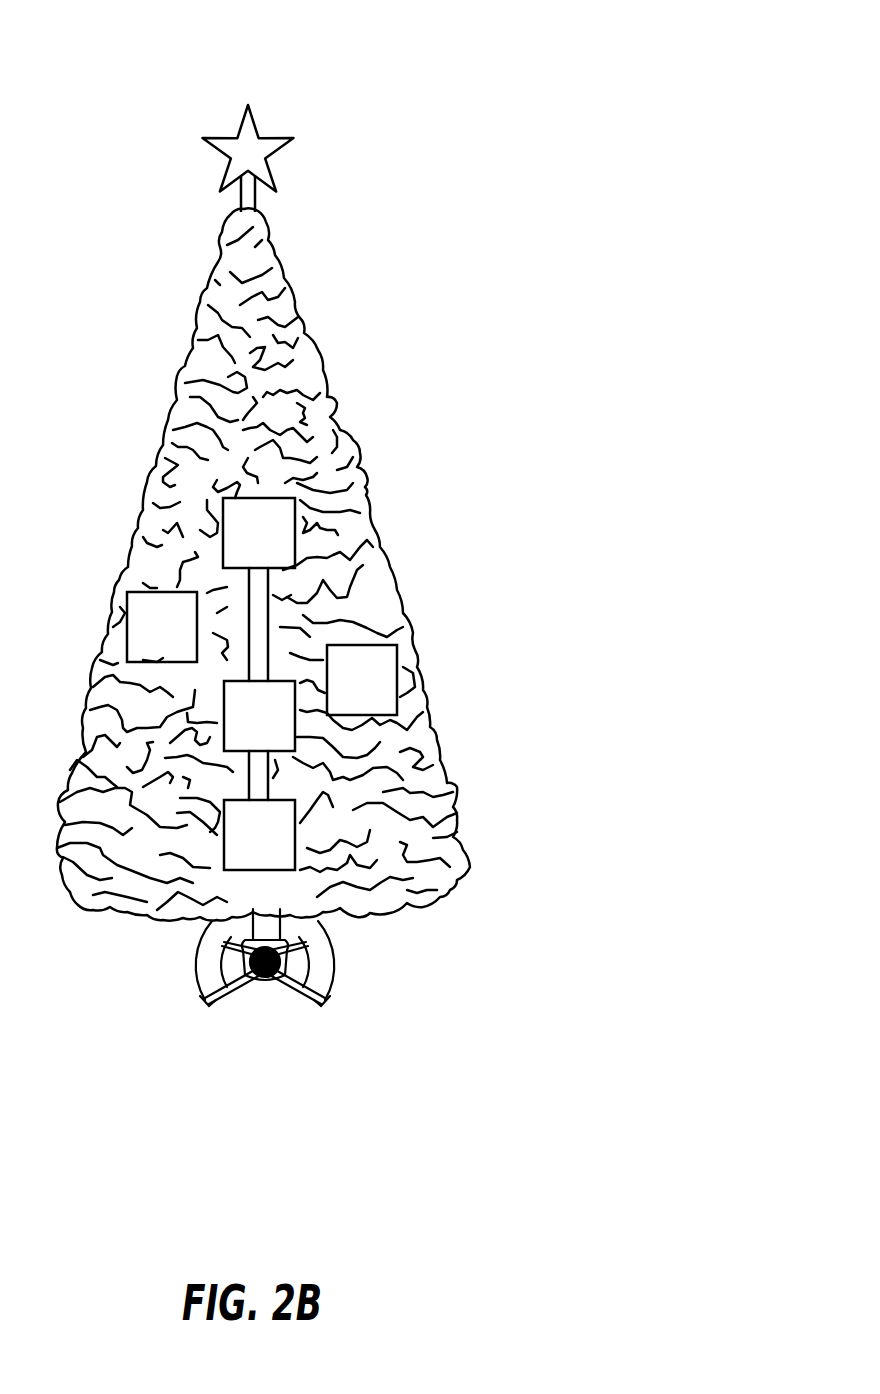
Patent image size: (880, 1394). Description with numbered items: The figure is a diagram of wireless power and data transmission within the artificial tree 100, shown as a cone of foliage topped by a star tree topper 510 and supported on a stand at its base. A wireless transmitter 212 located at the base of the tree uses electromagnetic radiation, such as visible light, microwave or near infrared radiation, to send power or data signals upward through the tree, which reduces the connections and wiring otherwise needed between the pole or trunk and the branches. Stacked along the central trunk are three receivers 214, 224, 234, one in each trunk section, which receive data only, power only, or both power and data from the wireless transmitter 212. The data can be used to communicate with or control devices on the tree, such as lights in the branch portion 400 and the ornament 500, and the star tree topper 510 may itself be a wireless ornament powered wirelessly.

The artificial tree 100 is at (532, 21).
The star tree topper 510 is at (272, 133).
The receiver 234 is at (274, 545).
The receiver 224 is at (275, 728).
The receiver 214 is at (275, 847).
The ornament 500 is at (177, 639).
The branch portion 400 is at (377, 692).
The wireless transmitter 212 is at (280, 957).